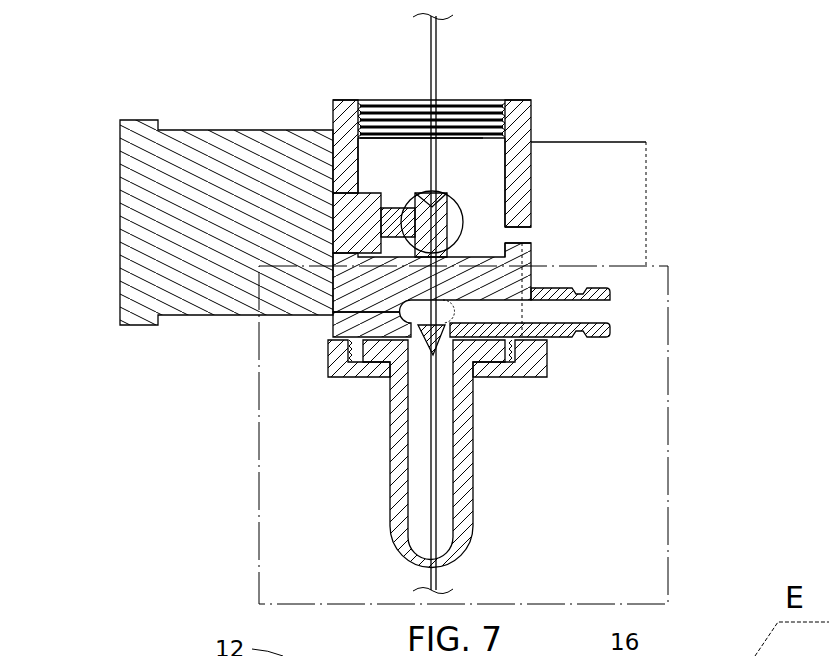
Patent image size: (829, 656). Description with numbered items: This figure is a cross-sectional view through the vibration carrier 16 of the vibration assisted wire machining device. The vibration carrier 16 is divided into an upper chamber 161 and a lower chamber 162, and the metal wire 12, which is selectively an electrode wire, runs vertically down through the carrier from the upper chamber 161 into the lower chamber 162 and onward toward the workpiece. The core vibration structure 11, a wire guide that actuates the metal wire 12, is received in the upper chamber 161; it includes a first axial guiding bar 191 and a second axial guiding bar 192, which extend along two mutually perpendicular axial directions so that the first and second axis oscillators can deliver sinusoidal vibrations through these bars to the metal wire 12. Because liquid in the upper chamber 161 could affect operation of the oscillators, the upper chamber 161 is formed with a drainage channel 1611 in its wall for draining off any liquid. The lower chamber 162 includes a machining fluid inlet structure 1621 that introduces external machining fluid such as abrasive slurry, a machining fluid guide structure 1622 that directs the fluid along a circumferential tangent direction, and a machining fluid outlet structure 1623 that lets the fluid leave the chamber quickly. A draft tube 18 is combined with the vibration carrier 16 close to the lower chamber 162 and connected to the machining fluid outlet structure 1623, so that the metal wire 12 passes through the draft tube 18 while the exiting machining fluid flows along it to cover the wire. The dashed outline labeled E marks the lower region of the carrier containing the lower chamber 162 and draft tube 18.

The metal wire 12 is at (437, 64).
The upper chamber 161 is at (485, 170).
The vibration carrier 16 is at (532, 178).
The core vibration structure 11 is at (448, 218).
The drainage channel 1611 is at (523, 239).
The first axial guiding bar 191 is at (294, 168).
The second axial guiding bar 192 is at (400, 208).
The draft tube 18 is at (397, 490).
The machining fluid outlet structure 1623 is at (459, 323).
The machining fluid guide structure 1622 is at (482, 305).
The machining fluid inlet structure 1621 is at (570, 318).
The lower chamber 162 is at (495, 420).
The region E is at (655, 265).